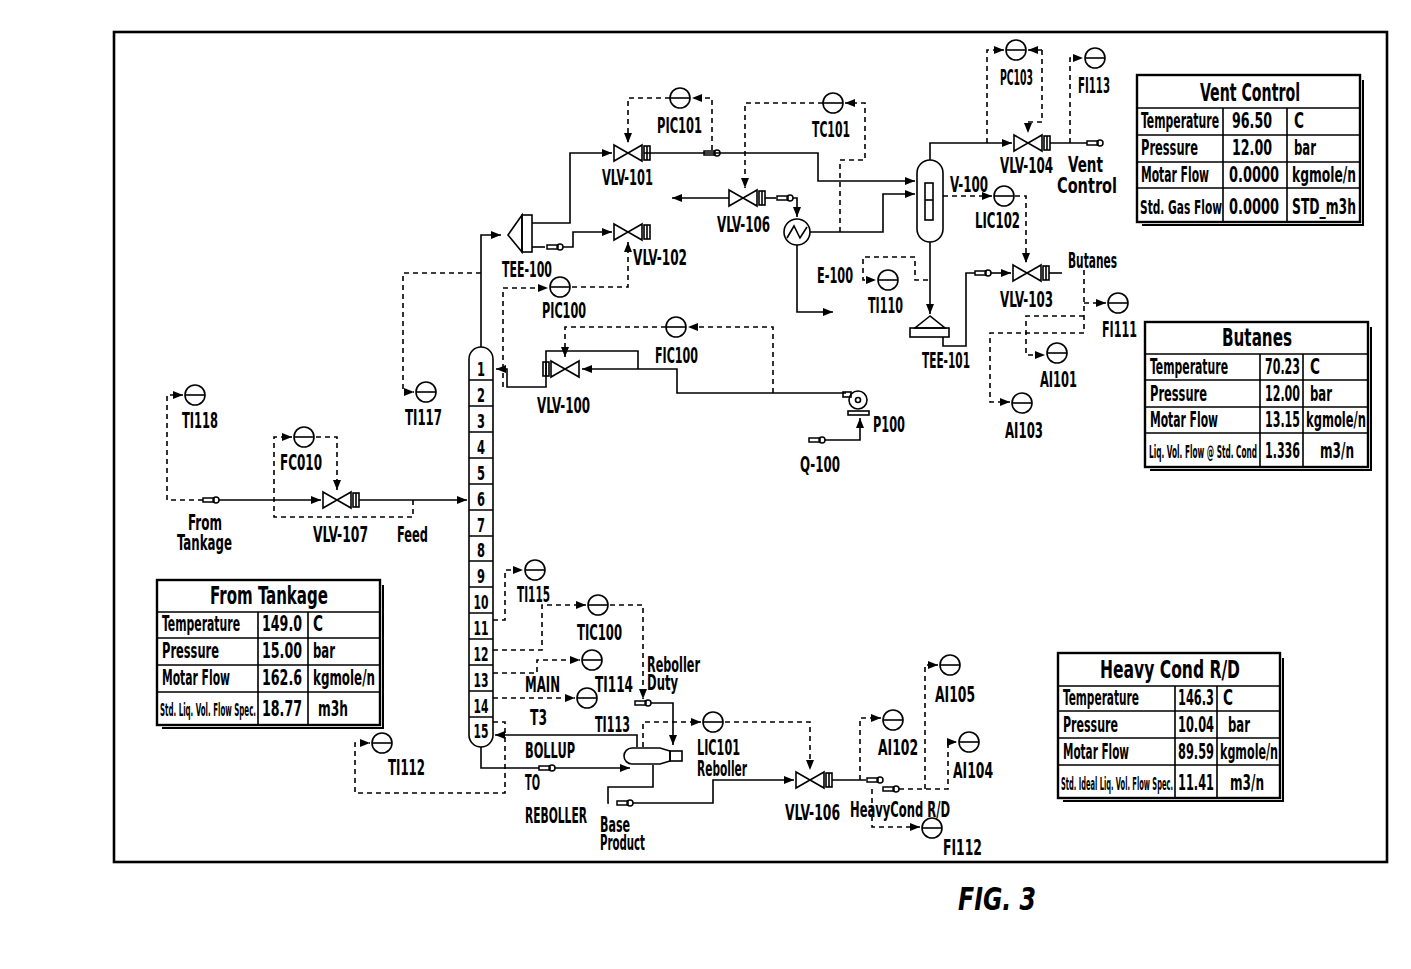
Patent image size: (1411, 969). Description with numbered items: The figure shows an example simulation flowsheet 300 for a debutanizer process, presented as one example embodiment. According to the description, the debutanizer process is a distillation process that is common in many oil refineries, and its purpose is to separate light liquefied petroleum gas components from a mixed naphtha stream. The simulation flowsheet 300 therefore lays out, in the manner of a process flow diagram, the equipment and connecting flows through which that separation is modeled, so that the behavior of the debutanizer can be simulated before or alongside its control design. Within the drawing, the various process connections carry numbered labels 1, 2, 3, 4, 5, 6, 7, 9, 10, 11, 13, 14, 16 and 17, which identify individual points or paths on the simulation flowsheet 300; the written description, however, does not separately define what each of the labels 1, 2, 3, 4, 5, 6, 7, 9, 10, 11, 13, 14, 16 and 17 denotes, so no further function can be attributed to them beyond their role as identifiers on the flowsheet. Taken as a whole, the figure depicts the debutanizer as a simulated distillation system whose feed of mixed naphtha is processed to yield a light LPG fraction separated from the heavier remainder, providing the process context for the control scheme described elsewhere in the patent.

The simulation flowsheet 300 is at (1222, 25).
The reflux stream 1 is at (567, 385).
The overhead product stream 2 is at (665, 246).
The cooled overhead stream to separator 3 is at (862, 228).
The bypass stream 4 is at (700, 213).
The condensed stream 5 is at (682, 287).
The column overhead vapor stream 6 is at (491, 291).
The tee outlet stream 7 is at (572, 188).
The overhead stream to separator 9 is at (779, 167).
The vent gas stream 10 is at (971, 157).
The butanes product stream 11 is at (977, 308).
The separator liquid stream 13 is at (940, 278).
The tee outlet stream 14 is at (929, 364).
The pump discharge stream 16 is at (742, 399).
The stream to exchanger 17 is at (781, 211).